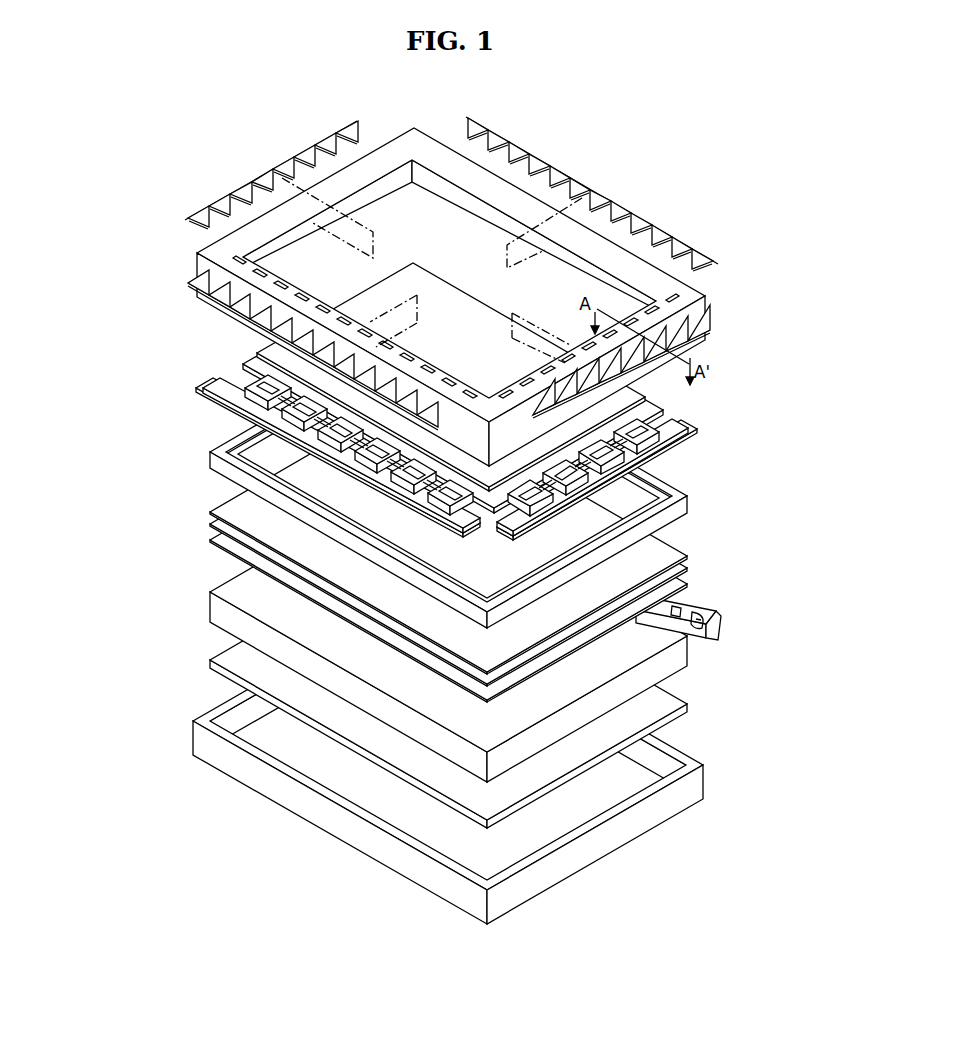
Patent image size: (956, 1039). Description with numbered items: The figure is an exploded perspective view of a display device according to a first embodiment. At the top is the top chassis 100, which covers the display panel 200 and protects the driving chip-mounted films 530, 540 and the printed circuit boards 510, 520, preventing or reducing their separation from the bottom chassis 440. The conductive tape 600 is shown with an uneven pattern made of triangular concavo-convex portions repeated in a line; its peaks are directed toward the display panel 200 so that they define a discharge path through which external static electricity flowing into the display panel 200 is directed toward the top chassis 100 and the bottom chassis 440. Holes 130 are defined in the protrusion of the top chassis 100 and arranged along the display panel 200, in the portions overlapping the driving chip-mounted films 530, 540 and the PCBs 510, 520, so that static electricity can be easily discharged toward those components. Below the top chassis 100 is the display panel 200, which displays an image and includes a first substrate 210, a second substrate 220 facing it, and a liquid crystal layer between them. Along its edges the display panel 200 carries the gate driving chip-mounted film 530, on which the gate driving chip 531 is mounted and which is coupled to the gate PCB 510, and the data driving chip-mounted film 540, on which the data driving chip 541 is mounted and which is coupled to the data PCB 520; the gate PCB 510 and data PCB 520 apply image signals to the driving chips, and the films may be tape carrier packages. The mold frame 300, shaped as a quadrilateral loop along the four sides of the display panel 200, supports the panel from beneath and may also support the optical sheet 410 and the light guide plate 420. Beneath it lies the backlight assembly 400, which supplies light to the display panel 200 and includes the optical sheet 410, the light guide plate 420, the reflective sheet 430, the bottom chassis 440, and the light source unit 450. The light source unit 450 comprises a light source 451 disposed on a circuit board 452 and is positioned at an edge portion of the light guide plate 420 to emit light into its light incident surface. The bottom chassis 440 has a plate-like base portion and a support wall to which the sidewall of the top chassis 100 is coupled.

The top chassis 100 is at (218, 247).
The holes 130 is at (232, 254).
The conductive tape 600 is at (200, 214).
The display panel 200 is at (526, 388).
The first substrate 210 is at (652, 412).
The second substrate 220 is at (637, 398).
The mold frame 300 is at (222, 470).
The backlight assembly 400 is at (447, 660).
The optical sheet 410 is at (407, 549).
The light guide plate 420 is at (216, 611).
The reflective sheet 430 is at (216, 674).
The bottom chassis 440 is at (204, 744).
The light source unit 450 is at (727, 619).
The light source 451 is at (693, 613).
The circuit board 452 is at (705, 628).
The gate PCB 510 is at (685, 428).
The data PCB 520 is at (240, 400).
The gate driving chip-mounted film 530 is at (663, 442).
The gate driving chip 531 is at (650, 437).
The data driving chip-mounted film 540 is at (268, 380).
The data driving chip 541 is at (265, 371).